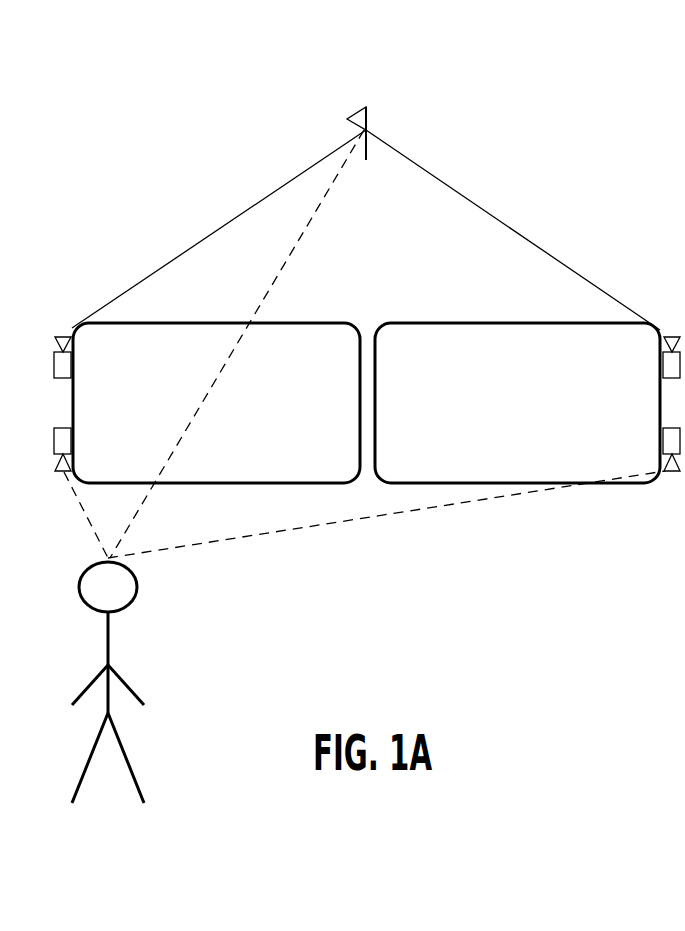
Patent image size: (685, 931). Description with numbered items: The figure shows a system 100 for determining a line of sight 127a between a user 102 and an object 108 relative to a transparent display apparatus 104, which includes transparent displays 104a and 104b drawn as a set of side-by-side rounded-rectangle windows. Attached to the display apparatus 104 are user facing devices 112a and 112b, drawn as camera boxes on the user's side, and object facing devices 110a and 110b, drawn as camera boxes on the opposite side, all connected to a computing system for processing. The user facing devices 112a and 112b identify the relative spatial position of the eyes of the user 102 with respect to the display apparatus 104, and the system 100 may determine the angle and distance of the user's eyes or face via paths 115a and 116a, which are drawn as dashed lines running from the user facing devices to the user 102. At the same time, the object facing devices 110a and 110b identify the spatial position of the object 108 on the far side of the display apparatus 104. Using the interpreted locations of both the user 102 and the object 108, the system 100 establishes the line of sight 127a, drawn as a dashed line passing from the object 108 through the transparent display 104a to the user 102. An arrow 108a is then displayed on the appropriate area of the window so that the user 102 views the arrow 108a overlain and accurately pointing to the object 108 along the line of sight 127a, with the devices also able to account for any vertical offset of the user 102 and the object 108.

The system 100 is at (252, 118).
The user 102 is at (110, 648).
The transparent display apparatus 104 is at (189, 204).
The transparent display 104a is at (318, 322).
The transparent display 104b is at (490, 322).
The object 108 is at (362, 110).
The arrow 108a is at (194, 404).
The object facing device 110a is at (53, 336).
The object facing device 110b is at (668, 337).
The user facing device 112a is at (52, 471).
The user facing device 112b is at (667, 475).
The path 115a is at (97, 543).
The path 116a is at (345, 525).
The line of sight 127a is at (282, 268).